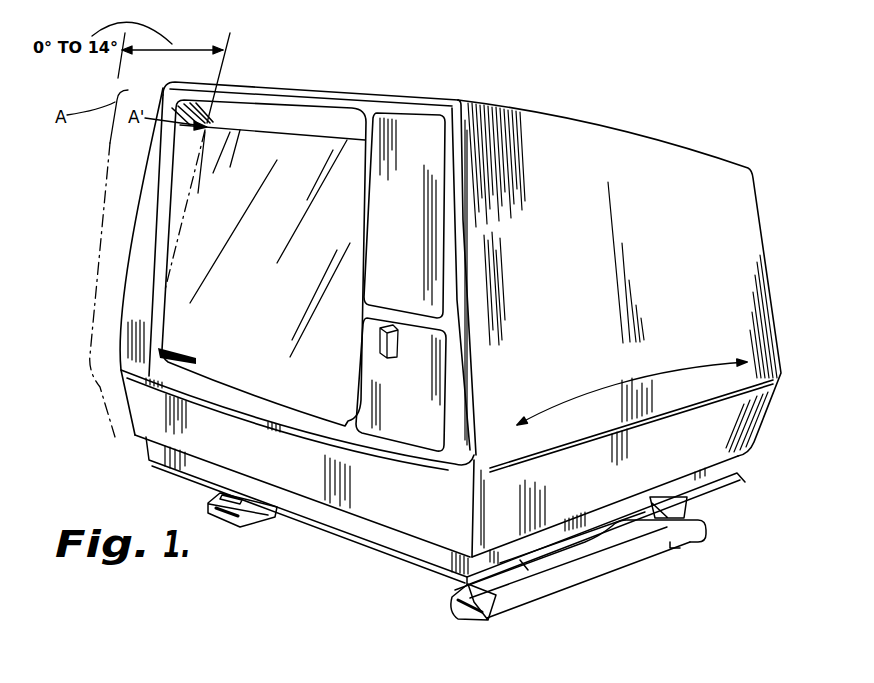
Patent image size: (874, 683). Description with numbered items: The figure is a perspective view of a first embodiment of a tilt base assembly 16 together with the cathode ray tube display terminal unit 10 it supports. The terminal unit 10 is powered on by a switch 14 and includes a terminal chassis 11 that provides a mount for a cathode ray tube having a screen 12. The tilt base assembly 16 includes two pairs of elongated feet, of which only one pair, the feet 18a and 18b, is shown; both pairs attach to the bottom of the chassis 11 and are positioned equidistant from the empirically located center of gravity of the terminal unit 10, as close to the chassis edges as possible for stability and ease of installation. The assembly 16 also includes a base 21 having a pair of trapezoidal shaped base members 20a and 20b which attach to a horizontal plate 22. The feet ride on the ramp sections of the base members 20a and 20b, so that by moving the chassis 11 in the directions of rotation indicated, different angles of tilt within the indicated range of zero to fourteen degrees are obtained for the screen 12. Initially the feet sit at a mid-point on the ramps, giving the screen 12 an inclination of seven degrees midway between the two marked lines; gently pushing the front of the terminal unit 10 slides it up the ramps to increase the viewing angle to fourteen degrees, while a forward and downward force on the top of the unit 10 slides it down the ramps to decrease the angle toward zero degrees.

The cathode ray tube (CRT) display terminal unit 10 is at (775, 270).
The terminal chassis 11 is at (633, 157).
The screen 12 is at (336, 172).
The switch 14 is at (387, 357).
The tilt base assembly 16 is at (705, 512).
The elongated foot 18a is at (520, 560).
The elongated foot 18b is at (677, 505).
The trapezoidal shaped base member 20a is at (250, 517).
The trapezoidal shaped base member 20b is at (507, 600).
The base 21 is at (639, 564).
The horizontal plate 22 is at (397, 557).